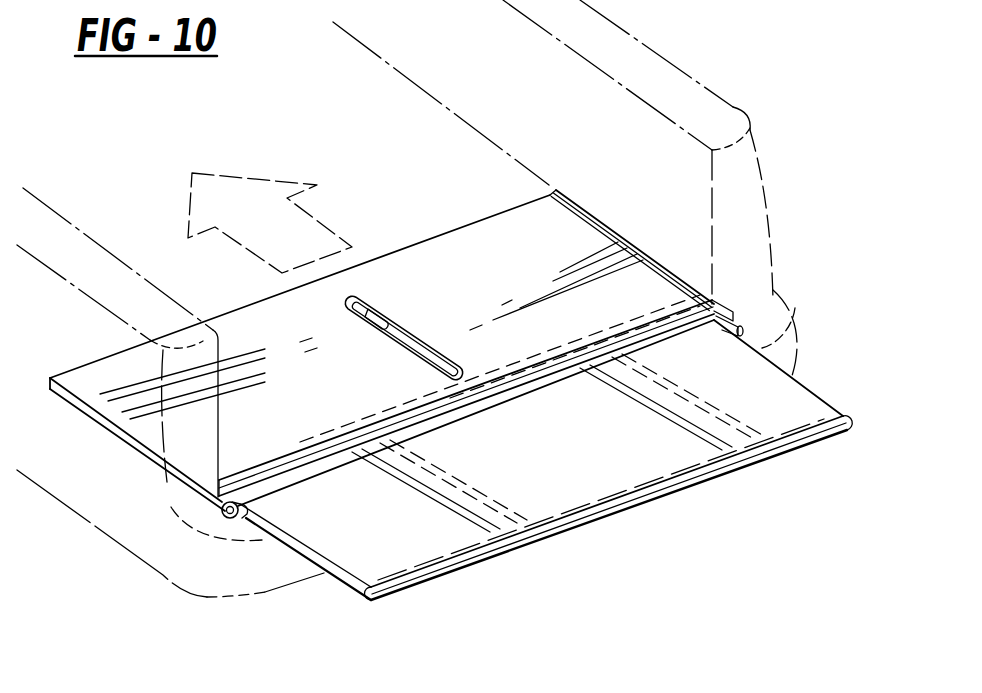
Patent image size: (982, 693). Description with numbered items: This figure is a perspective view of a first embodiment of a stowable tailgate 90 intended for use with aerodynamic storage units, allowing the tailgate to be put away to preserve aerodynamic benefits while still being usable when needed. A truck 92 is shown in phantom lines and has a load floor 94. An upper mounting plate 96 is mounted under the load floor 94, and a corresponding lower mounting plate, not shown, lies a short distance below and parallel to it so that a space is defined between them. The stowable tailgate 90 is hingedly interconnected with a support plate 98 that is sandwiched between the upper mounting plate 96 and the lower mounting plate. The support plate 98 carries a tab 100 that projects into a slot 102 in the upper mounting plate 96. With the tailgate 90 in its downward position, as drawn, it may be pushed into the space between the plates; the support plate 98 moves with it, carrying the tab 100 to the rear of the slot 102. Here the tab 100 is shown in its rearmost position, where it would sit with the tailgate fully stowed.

The stowable tailgate 90 is at (560, 471).
The truck 92 is at (703, 116).
The load floor 94 is at (380, 145).
The upper mounting plate 96 is at (529, 259).
The support plate 98 is at (306, 463).
The tab 100 is at (364, 314).
The slot 102 is at (404, 330).